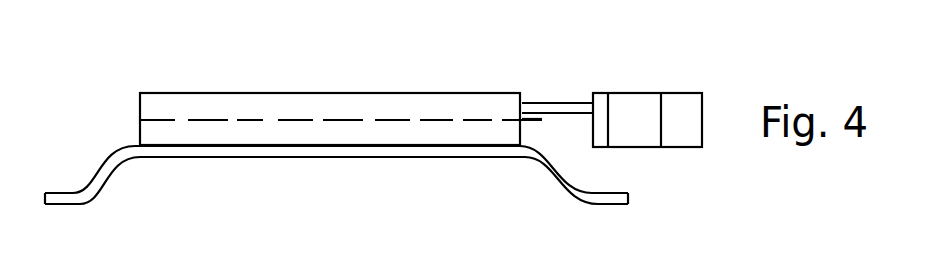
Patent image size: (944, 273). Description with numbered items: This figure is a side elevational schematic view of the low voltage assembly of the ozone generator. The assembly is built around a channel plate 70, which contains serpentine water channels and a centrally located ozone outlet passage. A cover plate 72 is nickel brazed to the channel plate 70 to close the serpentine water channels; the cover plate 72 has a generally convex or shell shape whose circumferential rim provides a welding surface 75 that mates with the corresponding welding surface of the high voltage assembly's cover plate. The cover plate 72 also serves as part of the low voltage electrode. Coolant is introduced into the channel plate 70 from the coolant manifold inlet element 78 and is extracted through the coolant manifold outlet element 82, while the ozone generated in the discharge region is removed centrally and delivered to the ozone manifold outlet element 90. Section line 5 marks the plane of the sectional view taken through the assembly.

The section line 5- 5 is at (115, 120).
The channel plate 70 is at (414, 93).
The cover plate 72 is at (552, 178).
The welding surface 75 is at (608, 204).
The coolant manifold inlet element 78 is at (681, 94).
The coolant manifold outlet element 82 is at (630, 94).
The ozone manifold outlet element 90 is at (597, 93).